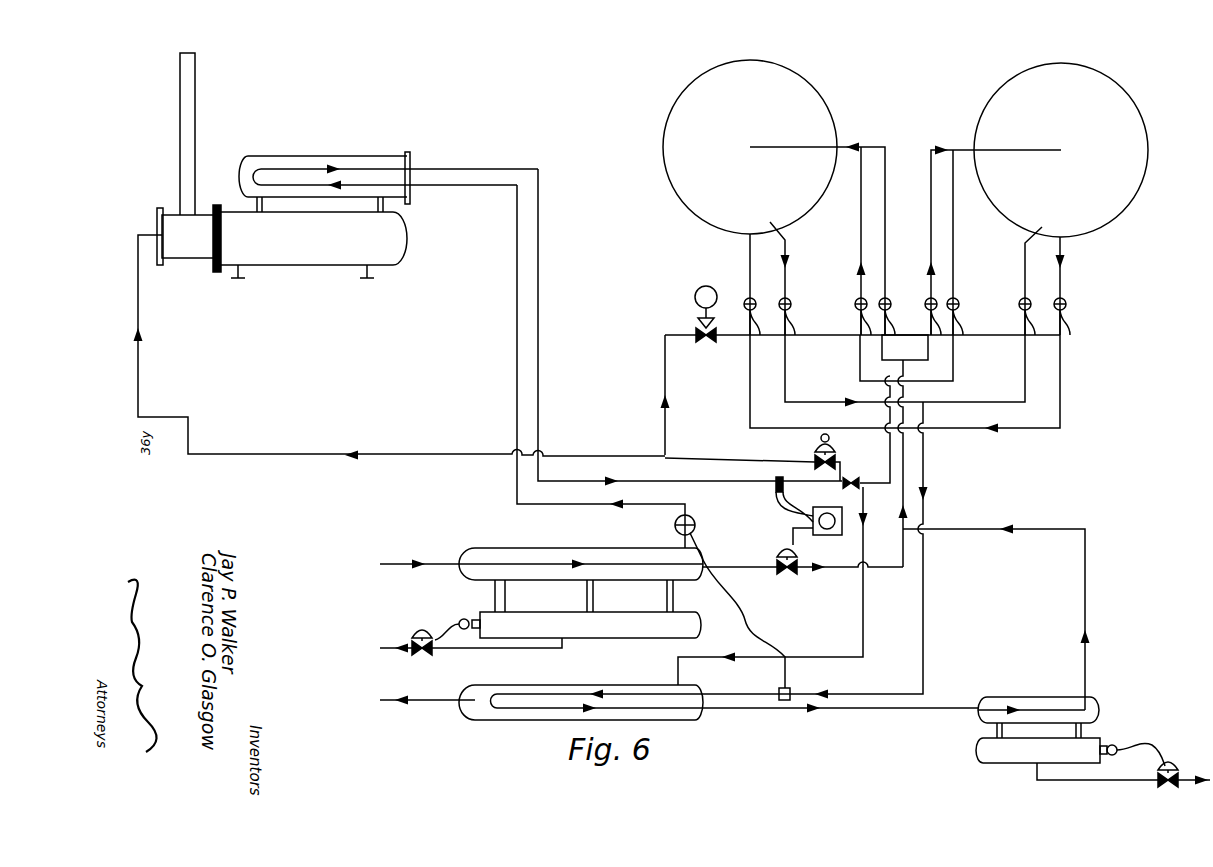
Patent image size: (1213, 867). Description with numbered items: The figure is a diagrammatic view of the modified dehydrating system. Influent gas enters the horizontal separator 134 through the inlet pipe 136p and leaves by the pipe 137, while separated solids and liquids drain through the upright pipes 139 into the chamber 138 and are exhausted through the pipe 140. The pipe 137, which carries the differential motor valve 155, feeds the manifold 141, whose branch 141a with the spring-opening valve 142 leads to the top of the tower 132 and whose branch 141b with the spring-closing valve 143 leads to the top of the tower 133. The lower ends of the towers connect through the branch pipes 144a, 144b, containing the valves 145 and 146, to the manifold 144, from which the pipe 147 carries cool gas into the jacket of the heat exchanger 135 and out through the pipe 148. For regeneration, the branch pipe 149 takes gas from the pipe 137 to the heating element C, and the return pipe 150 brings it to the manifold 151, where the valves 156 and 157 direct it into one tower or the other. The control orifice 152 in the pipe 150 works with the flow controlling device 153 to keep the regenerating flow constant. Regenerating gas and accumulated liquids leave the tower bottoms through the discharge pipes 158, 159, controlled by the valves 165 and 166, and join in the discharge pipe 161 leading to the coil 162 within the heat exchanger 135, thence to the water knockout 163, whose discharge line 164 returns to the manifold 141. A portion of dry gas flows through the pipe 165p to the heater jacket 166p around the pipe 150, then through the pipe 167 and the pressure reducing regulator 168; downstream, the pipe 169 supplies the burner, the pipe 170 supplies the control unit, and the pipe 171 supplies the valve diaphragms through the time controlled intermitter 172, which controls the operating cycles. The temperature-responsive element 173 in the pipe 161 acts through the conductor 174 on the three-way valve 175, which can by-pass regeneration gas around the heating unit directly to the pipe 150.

The heating element C is at (283, 265).
The tower 132 is at (668, 152).
The tower 133 is at (1140, 150).
The horizontal separator 134 is at (557, 555).
The heat exchanger 135 is at (630, 690).
The inlet pipe 136p is at (412, 560).
The pipe 137 is at (770, 566).
The chamber 138 is at (644, 612).
The upright pipes 139 is at (676, 598).
The pipe 140 is at (464, 652).
The manifold 141 is at (916, 360).
The branch 141a is at (885, 222).
The branch 141b is at (905, 252).
The spring-opening diaphragm-operated valve 142 is at (885, 294).
The spring-closing diaphragm-operated valve 143 is at (903, 305).
The manifold 144 is at (1002, 429).
The branch pipe 144a is at (749, 414).
The branch pipe 144b is at (1062, 362).
The spring-opening diaphragm-operated valve 145 is at (747, 298).
The spring-closing diaphragm-operated valve 146 is at (1066, 305).
The pipe 147 is at (864, 622).
The pipe 148 is at (433, 698).
The branch pipe 149 is at (598, 505).
The return pipe 150 is at (648, 480).
The manifold 151 is at (858, 366).
The control orifice 152 is at (765, 462).
The flow controlling device 153 is at (833, 537).
The differential motor valve 155 is at (790, 577).
The spring-closing diaphragm-operated valve 156 is at (856, 305).
The spring-opening diaphragm-operated valve 157 is at (956, 303).
The regenerating gas discharge pipe 158 is at (788, 268).
The regenerating gas discharge pipe 159 is at (1028, 236).
The discharge pipe 161 is at (930, 445).
The coil 162 is at (560, 679).
The water knockout 163 is at (1012, 698).
The discharge line 164 is at (1042, 529).
The spring-closing diaphragm-operated valve 165 is at (792, 302).
The pipe 165p is at (864, 507).
The spring-opening diaphragm-operated valve 166 is at (1020, 302).
The heater jacket 166p is at (851, 480).
The pipe 167 is at (838, 472).
The pressure reducing regulator 168 is at (815, 447).
The pipe 169 is at (400, 455).
The pipe 170 is at (806, 510).
The pipe 171 is at (1040, 336).
The time controlled intermitter 172 is at (708, 344).
The temperature-responsive element 173 is at (792, 690).
The conductor 174 is at (770, 634).
The three-way valve 175 is at (675, 530).